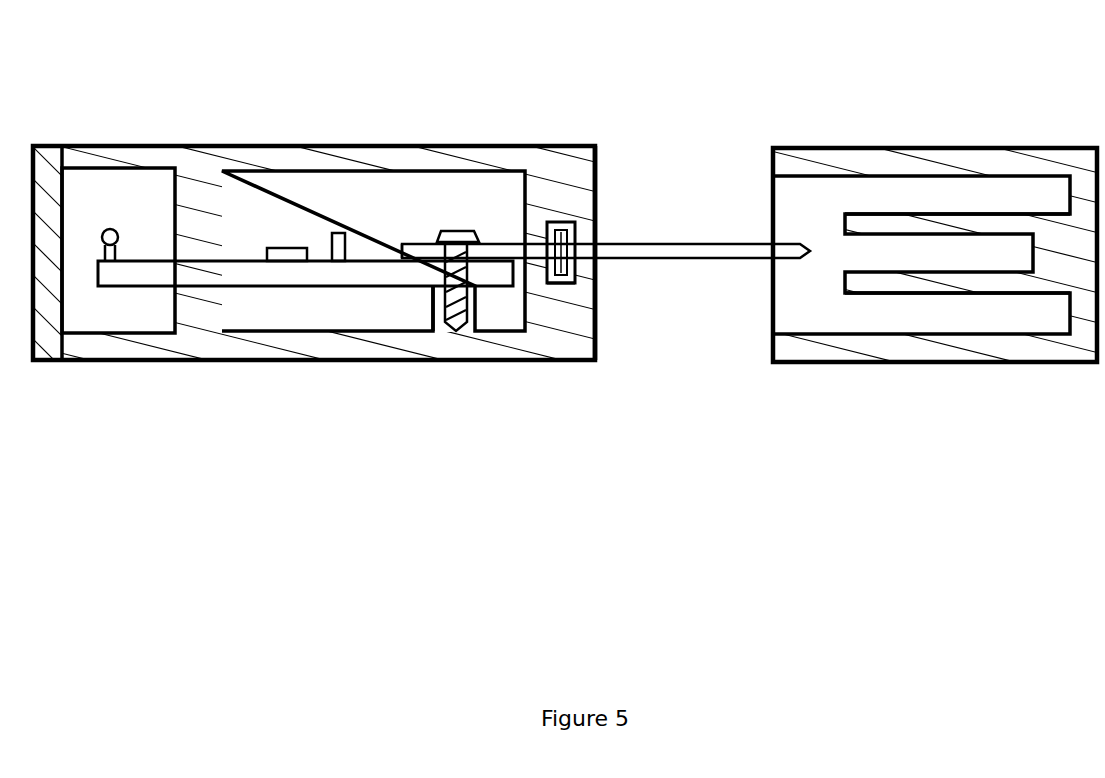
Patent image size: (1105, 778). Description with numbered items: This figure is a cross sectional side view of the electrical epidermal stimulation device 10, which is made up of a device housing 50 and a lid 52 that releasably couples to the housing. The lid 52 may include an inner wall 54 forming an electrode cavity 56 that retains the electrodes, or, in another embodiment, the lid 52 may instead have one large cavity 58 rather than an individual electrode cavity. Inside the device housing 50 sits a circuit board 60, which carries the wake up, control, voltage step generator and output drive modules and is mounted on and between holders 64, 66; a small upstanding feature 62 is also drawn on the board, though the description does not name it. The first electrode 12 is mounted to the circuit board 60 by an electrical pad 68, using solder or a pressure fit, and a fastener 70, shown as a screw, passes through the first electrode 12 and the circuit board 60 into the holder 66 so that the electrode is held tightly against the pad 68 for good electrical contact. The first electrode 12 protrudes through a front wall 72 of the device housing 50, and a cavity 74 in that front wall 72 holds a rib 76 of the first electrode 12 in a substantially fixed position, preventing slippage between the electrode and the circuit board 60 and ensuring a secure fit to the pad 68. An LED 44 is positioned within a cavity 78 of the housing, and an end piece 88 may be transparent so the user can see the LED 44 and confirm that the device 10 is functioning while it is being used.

The device 10 is at (382, 462).
The first electrode 12 is at (606, 392).
The LED 44 is at (305, 416).
The device housing 50 is at (552, 203).
The lid 52 is at (552, 195).
The inner wall 54 is at (920, 220).
The electrode cavity 56 is at (945, 258).
The large cavity 58 is at (921, 255).
The circuit board 60 is at (237, 270).
The stop 62 is at (347, 223).
The holder 64 is at (269, 305).
The holder 66 is at (389, 308).
The electrical pad 68 is at (404, 223).
The fastener 70 is at (468, 255).
The front wall 72 is at (649, 212).
The cavity 74 is at (630, 226).
The rib 76 is at (623, 338).
The cavity 78 is at (128, 139).
The end piece 88 is at (65, 336).